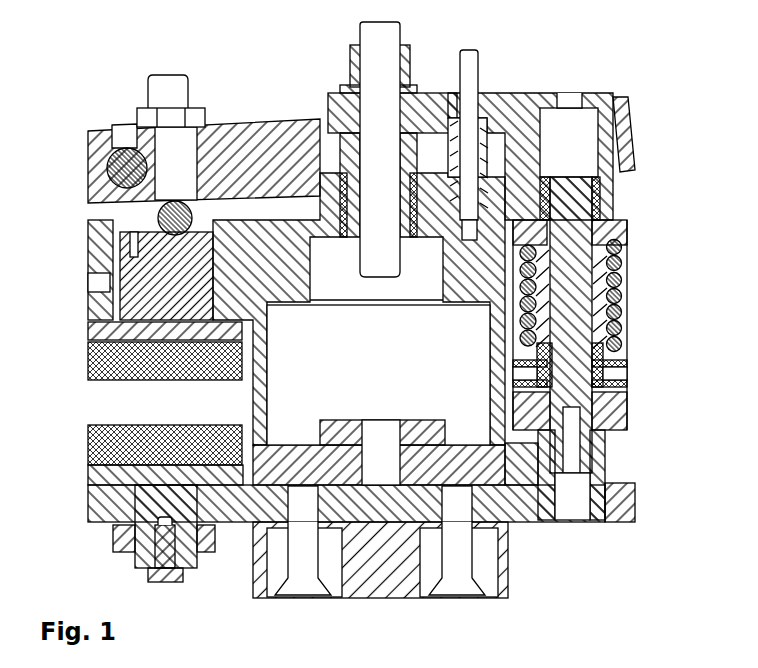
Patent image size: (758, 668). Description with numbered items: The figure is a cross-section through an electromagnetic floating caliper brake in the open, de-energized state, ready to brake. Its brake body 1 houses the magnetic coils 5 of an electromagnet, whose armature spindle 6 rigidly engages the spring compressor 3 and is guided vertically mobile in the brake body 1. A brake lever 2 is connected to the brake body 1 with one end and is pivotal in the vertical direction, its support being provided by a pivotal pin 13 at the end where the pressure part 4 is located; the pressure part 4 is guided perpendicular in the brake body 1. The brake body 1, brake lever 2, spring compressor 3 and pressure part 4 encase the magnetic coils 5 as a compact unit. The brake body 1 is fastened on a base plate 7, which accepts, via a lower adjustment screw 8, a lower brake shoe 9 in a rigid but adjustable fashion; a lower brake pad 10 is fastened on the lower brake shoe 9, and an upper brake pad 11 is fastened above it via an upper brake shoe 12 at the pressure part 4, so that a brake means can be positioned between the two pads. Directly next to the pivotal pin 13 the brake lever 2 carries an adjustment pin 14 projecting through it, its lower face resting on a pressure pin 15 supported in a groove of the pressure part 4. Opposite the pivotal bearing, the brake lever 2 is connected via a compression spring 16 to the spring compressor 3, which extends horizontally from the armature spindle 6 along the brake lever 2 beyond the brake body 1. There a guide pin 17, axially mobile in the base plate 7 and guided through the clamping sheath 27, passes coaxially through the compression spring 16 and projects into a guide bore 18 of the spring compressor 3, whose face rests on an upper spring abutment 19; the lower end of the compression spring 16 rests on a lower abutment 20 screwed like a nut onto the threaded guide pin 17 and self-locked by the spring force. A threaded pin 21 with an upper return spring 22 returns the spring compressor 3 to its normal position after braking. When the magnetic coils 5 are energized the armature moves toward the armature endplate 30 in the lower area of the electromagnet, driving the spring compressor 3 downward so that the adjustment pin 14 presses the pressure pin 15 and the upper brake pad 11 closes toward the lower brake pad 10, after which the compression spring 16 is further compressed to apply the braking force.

The brake body 1 is at (245, 228).
The brake lever 2 is at (632, 120).
The spring compressor 3 is at (593, 100).
The pressure part 4 is at (156, 275).
The magnetic coils 5 is at (388, 362).
The armature spindle 6 is at (376, 92).
The base plate 7 is at (625, 500).
The lower adjustment screw 8 is at (143, 541).
The lower brake shoe 9 is at (106, 470).
The lower brake pad 10 is at (120, 435).
The upper brake pad 11 is at (105, 358).
The upper brake shoe 12 is at (108, 330).
The pivotal pin 13 is at (125, 162).
The adjustment pin 14 is at (190, 92).
The pressure pin 15 is at (168, 214).
The compression spring 16 is at (618, 291).
The guide pin 17 is at (578, 205).
The guide bore 18 is at (690, 155).
The upper spring abutment 19 is at (630, 232).
The lower abutment 20 is at (630, 363).
The threaded pin 21 is at (524, 56).
The upper return spring 22 is at (487, 158).
The clamping sheath 27 is at (606, 440).
The armature endplate 30 is at (337, 422).